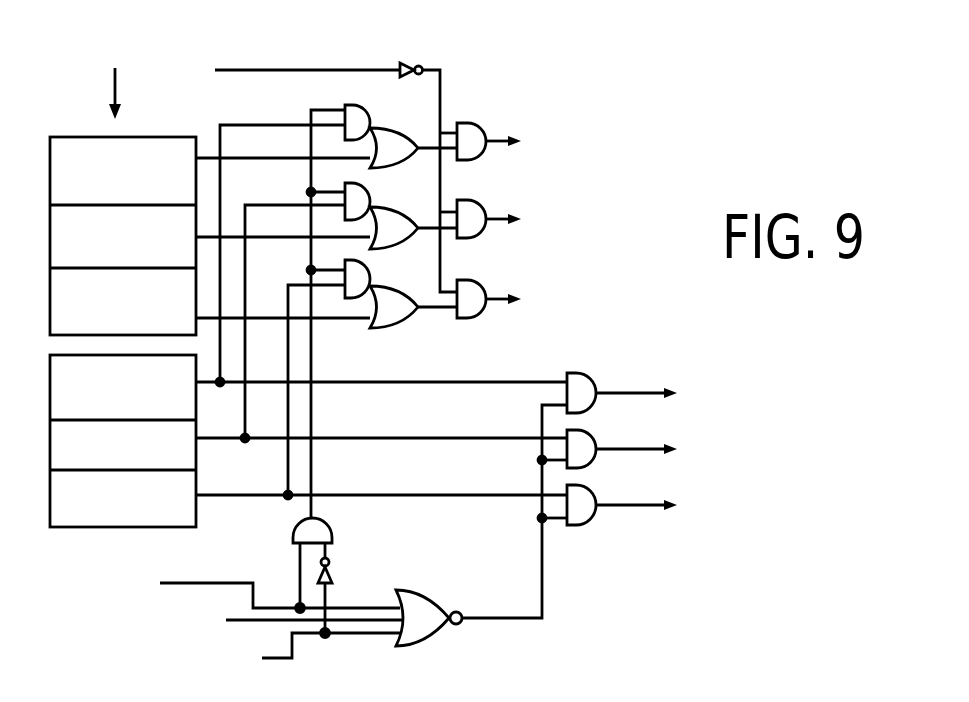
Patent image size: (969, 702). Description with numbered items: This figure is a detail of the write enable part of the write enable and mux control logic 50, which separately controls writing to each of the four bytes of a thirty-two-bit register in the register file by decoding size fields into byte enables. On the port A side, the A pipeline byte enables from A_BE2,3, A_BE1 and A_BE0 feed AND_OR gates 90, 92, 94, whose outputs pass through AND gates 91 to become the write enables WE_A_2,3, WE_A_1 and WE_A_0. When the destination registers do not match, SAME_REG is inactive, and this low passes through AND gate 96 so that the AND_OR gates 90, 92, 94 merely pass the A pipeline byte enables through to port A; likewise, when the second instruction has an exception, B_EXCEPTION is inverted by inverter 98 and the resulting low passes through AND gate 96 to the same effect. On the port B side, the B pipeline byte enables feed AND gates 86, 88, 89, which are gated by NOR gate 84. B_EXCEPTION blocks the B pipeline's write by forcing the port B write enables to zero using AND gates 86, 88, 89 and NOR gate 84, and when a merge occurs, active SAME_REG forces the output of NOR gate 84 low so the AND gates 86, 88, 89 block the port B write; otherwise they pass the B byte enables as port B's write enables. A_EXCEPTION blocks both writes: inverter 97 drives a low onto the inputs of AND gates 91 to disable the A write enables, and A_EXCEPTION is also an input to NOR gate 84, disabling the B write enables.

The write enable and mux control logic 50 is at (740, 559).
The NOR gate 84 is at (420, 604).
The AND gate 86 is at (578, 413).
The AND gate 88 is at (578, 468).
The AND gate 89 is at (578, 525).
The AND_OR gate 90 is at (391, 130).
The AND gates 91 is at (471, 123).
The AND_OR gate 92 is at (391, 211).
The AND_OR gate 94 is at (391, 289).
The AND gate 96 is at (294, 531).
The inverter 97 is at (418, 66).
The inverter 98 is at (334, 579).